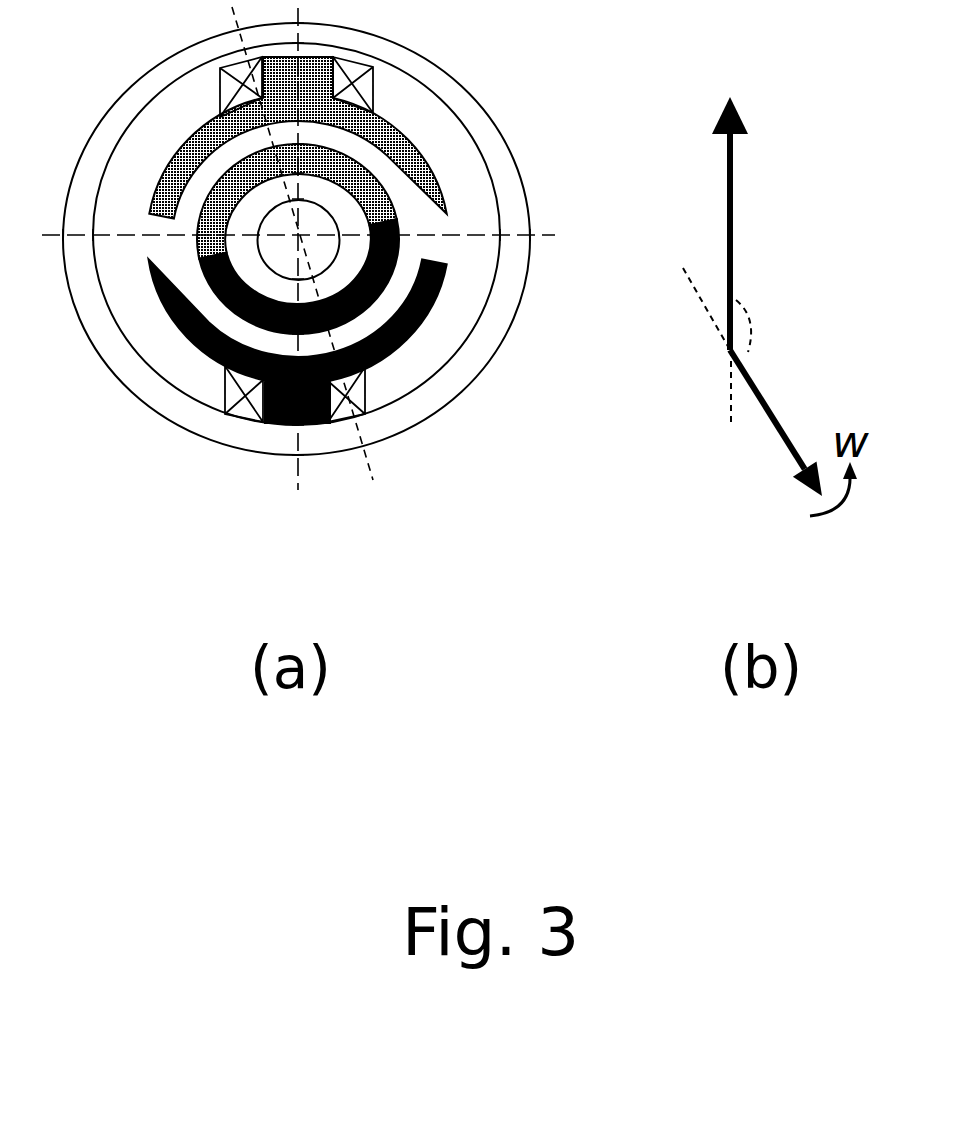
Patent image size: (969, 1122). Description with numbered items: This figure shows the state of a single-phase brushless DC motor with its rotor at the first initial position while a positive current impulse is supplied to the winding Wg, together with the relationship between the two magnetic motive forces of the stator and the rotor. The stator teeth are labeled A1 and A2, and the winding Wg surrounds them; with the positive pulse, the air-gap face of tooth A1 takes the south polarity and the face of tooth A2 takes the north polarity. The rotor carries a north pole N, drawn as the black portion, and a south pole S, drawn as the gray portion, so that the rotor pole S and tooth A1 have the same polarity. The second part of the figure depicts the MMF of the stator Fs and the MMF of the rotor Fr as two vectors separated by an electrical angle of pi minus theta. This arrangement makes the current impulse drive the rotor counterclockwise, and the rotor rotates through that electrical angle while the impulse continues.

The winding Wg is at (337, 100).
The stator tooth A1 is at (425, 142).
The stator tooth A2 is at (418, 348).
The south pole S is at (180, 220).
The north pole N is at (418, 247).
The rotor angular velocity w is at (170, 240).
The MMF of the stator Fs is at (767, 217).
The MMF of the rotor Fr is at (752, 399).